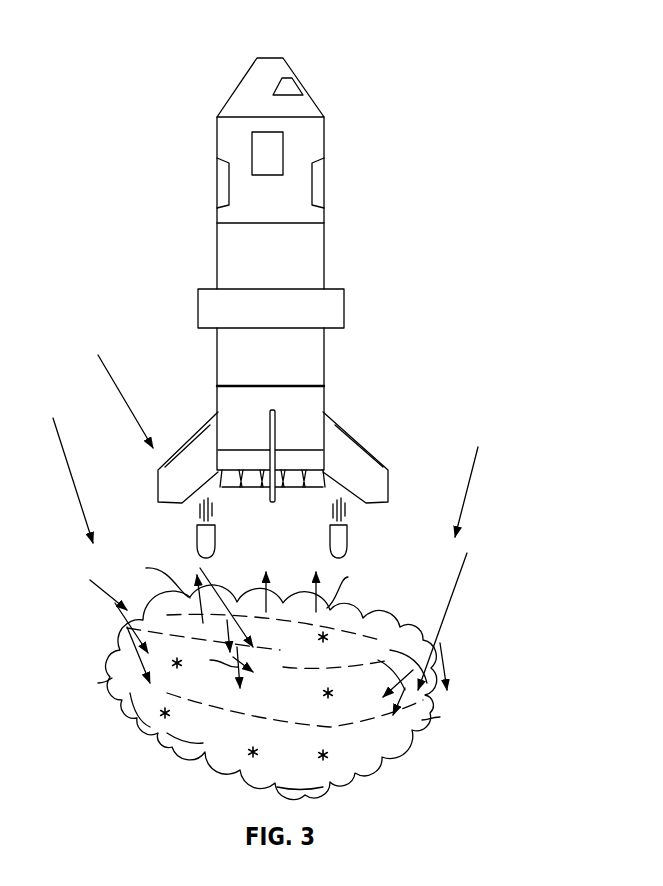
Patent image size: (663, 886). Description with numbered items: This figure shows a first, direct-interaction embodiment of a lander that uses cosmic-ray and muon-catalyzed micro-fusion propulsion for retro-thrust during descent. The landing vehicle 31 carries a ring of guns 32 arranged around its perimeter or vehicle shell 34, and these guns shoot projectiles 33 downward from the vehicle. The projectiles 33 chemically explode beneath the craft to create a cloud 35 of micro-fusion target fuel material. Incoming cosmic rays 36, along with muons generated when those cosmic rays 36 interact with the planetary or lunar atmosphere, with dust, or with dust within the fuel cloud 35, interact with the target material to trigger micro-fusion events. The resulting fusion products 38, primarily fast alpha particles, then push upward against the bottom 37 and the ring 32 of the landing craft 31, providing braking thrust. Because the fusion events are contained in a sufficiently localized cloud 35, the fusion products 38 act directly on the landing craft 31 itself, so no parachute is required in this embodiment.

The landing vehicle 31 is at (92, 32).
The ring of guns 32 is at (344, 308).
The projectiles 33 is at (196, 540).
The vehicle shell 34 is at (285, 271).
The cloud 35 is at (172, 760).
The incoming cosmic rays 36 is at (117, 378).
The bottom of the landing craft 37 is at (243, 487).
The fusion products 38 is at (316, 593).